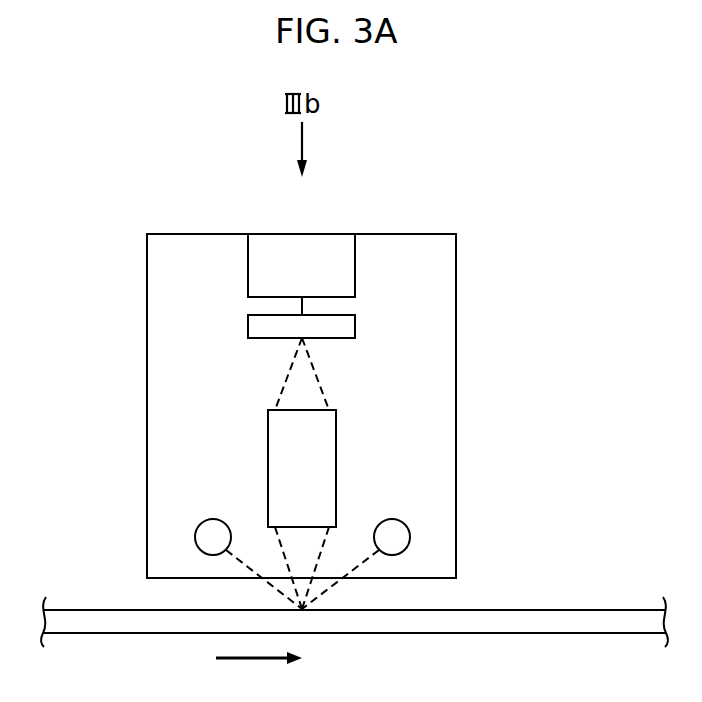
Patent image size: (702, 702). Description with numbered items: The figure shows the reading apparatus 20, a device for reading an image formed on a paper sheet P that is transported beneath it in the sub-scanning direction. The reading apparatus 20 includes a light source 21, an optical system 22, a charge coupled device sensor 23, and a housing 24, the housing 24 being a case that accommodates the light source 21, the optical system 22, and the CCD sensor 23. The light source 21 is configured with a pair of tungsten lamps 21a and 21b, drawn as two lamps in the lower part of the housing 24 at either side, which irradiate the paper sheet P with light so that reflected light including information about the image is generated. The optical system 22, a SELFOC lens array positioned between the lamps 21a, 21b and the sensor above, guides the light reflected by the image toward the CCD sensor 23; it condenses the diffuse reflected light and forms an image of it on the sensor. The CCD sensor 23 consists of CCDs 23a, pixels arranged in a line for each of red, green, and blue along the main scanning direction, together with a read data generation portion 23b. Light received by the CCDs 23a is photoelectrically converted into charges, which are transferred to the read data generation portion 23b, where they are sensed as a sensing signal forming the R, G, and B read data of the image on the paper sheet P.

The reading apparatus 20 is at (480, 198).
The light source 21 is at (200, 489).
The tungsten lamp 21a is at (195, 537).
The tungsten lamp 21b is at (410, 537).
The optical system 22 is at (336, 454).
The CCD sensor 23 is at (409, 290).
The CCDs 23a is at (355, 326).
The read data generation portion 23b is at (355, 269).
The housing 24 is at (456, 390).
The paper sheet P is at (75, 608).